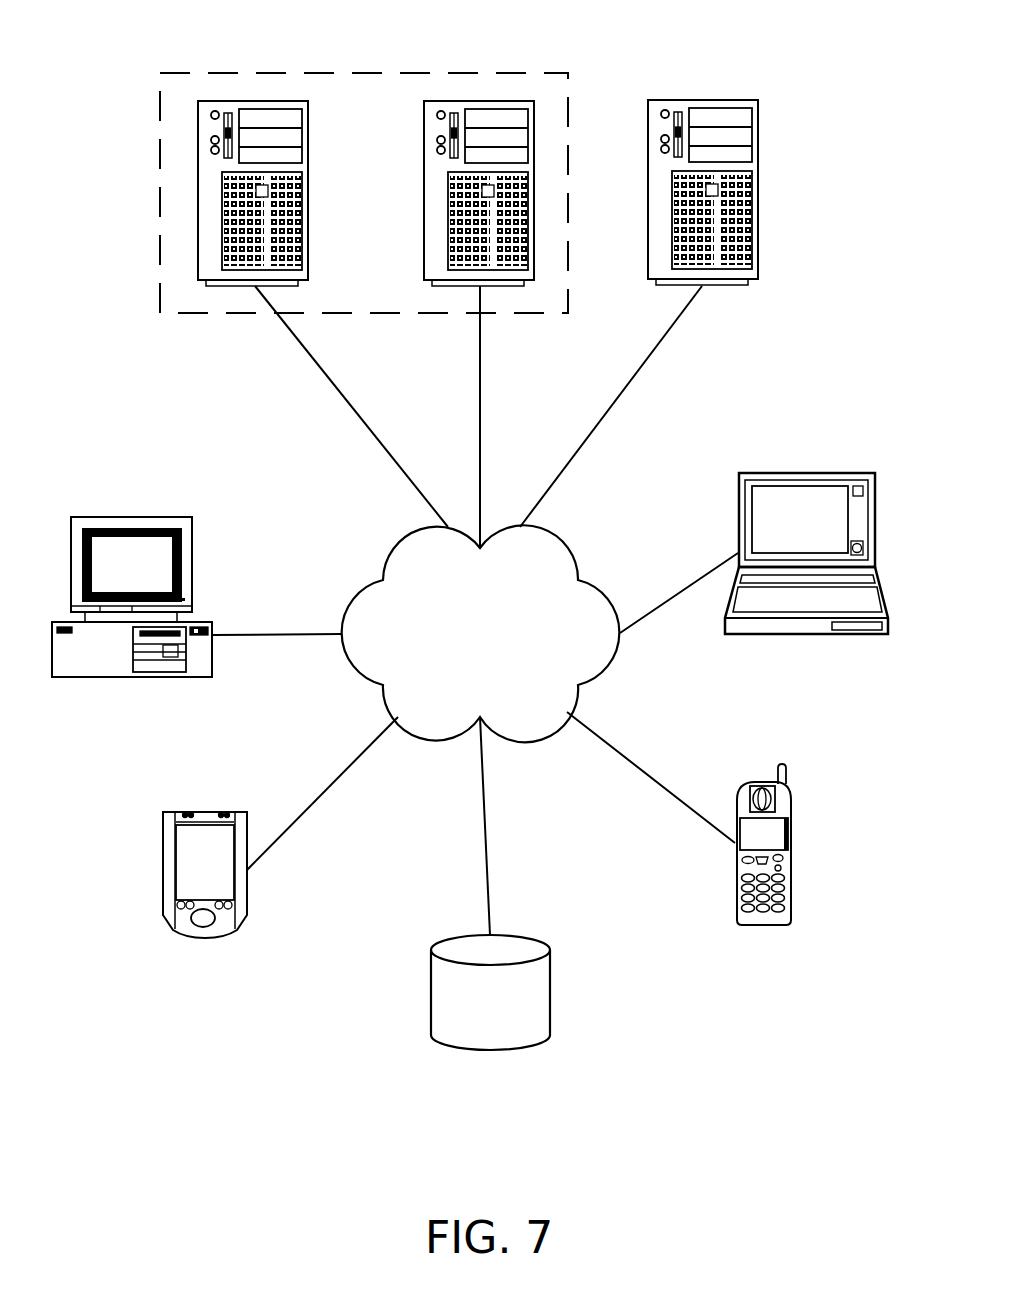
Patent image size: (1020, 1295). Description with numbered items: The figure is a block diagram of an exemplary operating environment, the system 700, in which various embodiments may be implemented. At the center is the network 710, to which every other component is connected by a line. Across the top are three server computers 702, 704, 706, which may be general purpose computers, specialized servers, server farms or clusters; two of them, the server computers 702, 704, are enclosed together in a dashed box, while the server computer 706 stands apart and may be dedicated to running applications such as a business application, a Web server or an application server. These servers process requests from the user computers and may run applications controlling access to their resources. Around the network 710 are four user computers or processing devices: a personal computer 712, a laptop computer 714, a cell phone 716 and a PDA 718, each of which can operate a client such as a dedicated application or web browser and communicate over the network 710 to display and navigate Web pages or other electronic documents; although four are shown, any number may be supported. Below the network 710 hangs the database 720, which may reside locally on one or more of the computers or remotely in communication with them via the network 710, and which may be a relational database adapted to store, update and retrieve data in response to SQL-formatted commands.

The system 700 is at (859, 100).
The server computer 702 is at (235, 100).
The server computer 704 is at (477, 100).
The server computer 706 is at (759, 190).
The network 710 is at (481, 633).
The user computer 712 is at (130, 517).
The user computer 714 is at (803, 473).
The user computer 716 is at (758, 927).
The user computer 718 is at (203, 937).
The database 720 is at (490, 992).